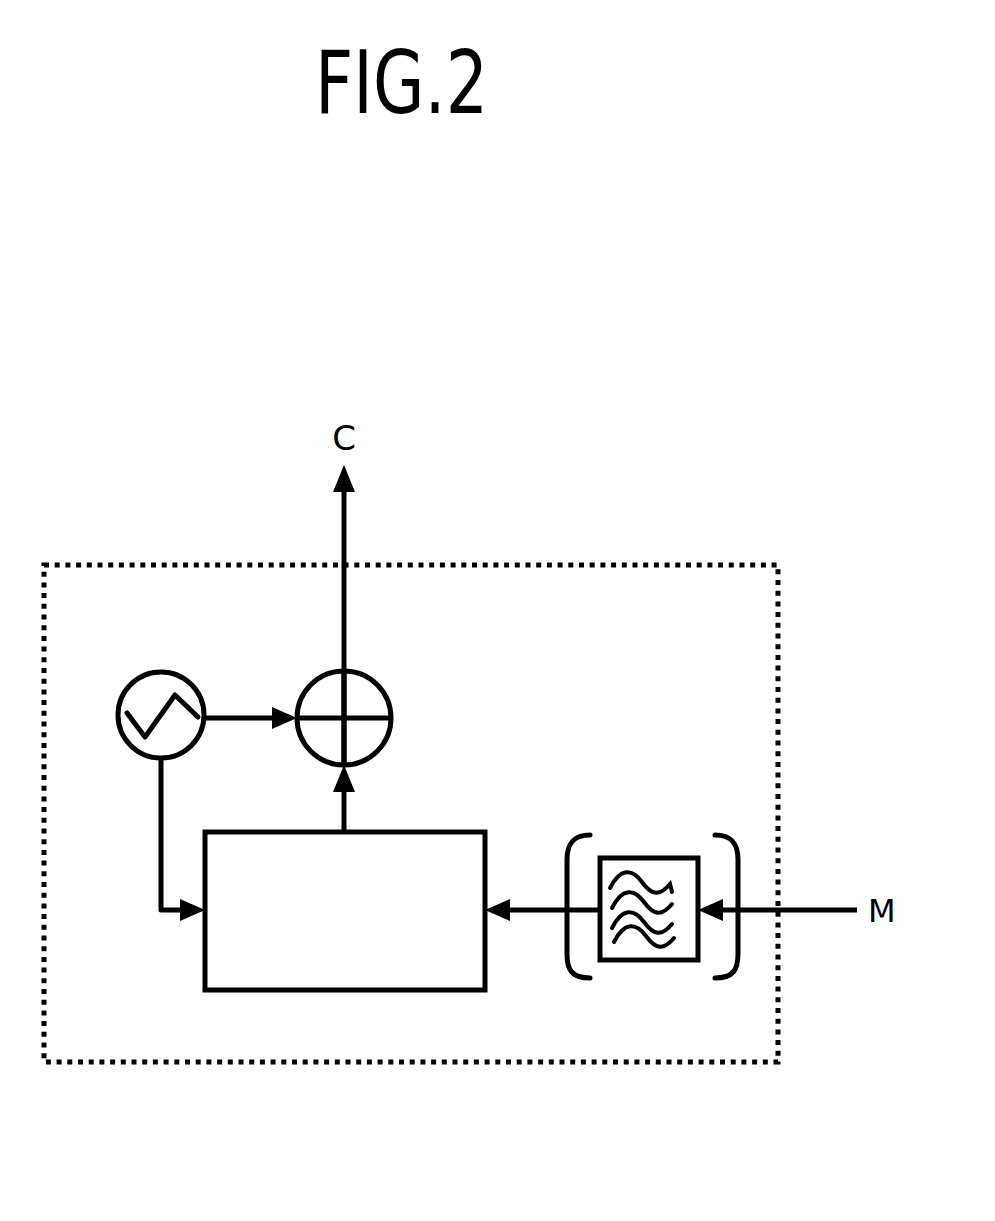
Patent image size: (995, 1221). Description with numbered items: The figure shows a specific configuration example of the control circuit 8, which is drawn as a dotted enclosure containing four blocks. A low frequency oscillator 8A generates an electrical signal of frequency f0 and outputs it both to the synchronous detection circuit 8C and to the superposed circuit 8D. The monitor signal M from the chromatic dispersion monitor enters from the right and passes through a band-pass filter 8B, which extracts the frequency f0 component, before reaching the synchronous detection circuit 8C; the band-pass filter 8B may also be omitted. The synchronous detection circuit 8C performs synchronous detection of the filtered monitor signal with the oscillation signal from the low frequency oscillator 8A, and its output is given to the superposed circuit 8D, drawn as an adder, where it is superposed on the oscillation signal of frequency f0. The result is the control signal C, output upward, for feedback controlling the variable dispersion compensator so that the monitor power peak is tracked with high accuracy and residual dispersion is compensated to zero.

The control circuit 8 is at (668, 565).
The low frequency oscillator 8A is at (133, 677).
The band-pass filter 8B is at (640, 858).
The synchronous detection circuit 8C is at (421, 832).
The superposed circuit 8D is at (318, 684).